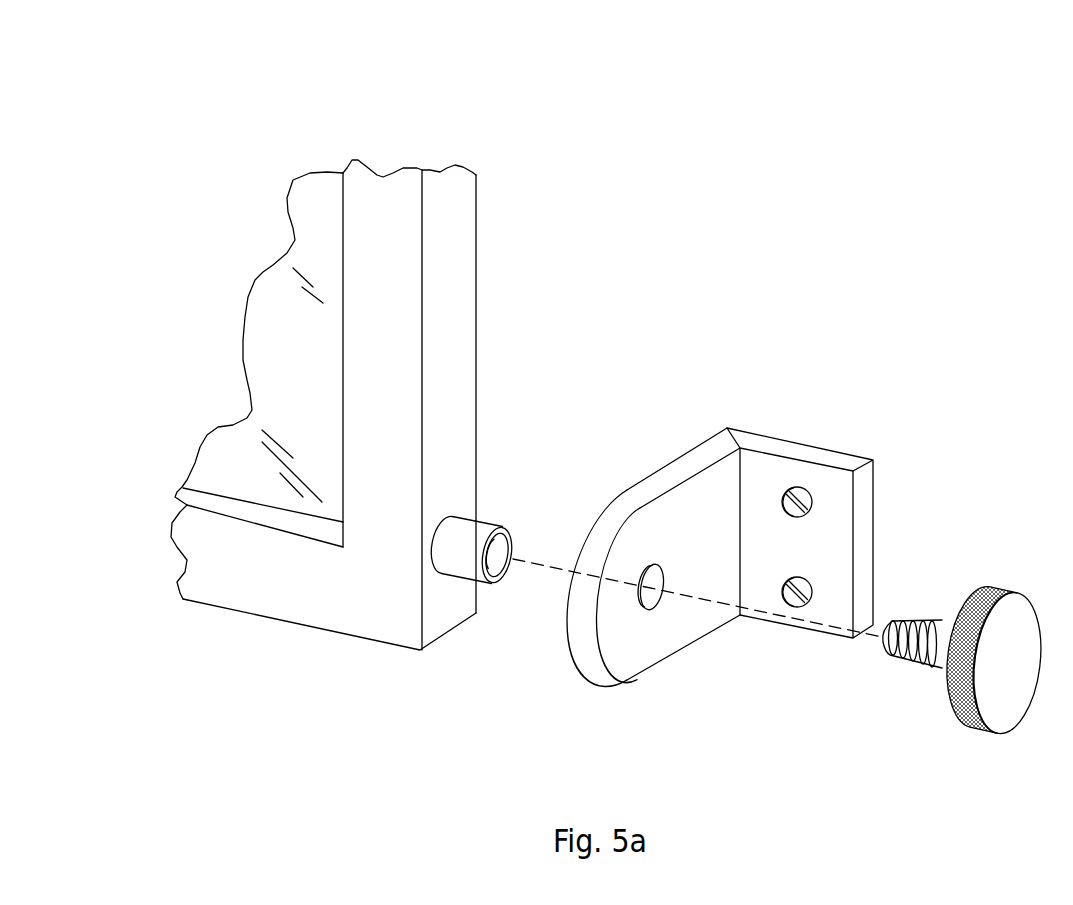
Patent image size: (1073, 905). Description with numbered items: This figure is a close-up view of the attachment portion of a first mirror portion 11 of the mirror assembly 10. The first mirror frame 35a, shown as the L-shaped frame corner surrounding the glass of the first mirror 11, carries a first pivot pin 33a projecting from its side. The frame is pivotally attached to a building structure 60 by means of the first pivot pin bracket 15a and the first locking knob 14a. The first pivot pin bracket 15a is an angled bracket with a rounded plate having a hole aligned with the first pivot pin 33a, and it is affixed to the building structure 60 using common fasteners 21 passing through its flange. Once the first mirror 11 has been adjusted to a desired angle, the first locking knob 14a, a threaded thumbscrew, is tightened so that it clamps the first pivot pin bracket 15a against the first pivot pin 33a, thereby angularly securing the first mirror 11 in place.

The mirror assembly 10 is at (106, 136).
The first mirror portion 11 is at (283, 363).
The first mirror frame 35a is at (455, 247).
The first pivot pin 33a is at (472, 532).
The building structure 60 is at (673, 427).
The first pivot pin bracket 15a is at (578, 645).
The common fasteners 21 is at (813, 585).
The first locking knob 14a is at (992, 675).